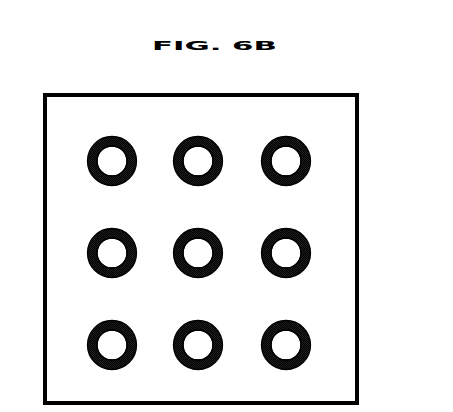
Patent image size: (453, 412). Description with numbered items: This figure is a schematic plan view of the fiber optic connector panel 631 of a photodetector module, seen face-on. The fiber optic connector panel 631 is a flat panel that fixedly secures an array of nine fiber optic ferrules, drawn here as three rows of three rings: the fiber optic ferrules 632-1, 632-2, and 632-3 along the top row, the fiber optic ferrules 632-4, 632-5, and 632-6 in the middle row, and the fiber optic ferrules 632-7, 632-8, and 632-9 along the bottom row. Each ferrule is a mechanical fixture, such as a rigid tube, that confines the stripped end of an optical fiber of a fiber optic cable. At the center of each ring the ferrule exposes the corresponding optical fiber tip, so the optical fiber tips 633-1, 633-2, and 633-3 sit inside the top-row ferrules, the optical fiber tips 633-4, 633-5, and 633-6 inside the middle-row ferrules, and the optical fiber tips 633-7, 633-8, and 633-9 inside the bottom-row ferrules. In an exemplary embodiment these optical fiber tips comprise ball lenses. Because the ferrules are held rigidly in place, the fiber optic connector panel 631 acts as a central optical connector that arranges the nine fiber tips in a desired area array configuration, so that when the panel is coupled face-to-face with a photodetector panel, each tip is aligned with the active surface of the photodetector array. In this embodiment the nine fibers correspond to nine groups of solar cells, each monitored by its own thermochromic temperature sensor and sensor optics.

The fiber optic connector panel 631 is at (93, 94).
The fiber optic ferrule 632-1 is at (114, 137).
The optical fiber tip 633-1 is at (112, 166).
The fiber optic ferrule 632-2 is at (200, 137).
The optical fiber tip 633-2 is at (198, 166).
The fiber optic ferrule 632-3 is at (288, 137).
The optical fiber tip 633-3 is at (286, 166).
The fiber optic ferrule 632-4 is at (114, 229).
The optical fiber tip 633-4 is at (112, 258).
The fiber optic ferrule 632-5 is at (200, 229).
The optical fiber tip 633-5 is at (198, 258).
The fiber optic ferrule 632-6 is at (288, 229).
The optical fiber tip 633-6 is at (286, 258).
The fiber optic ferrule 632-7 is at (114, 321).
The optical fiber tip 633-7 is at (112, 350).
The fiber optic ferrule 632-8 is at (200, 321).
The optical fiber tip 633-8 is at (198, 350).
The fiber optic ferrule 632-9 is at (288, 321).
The optical fiber tip 633-9 is at (286, 350).